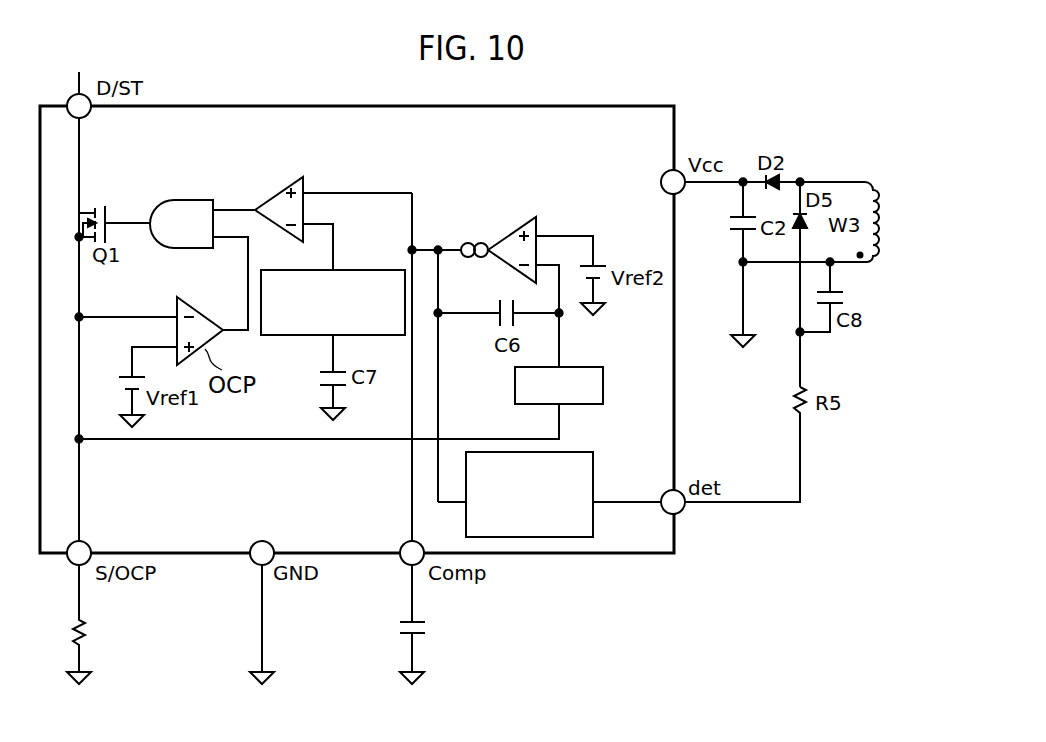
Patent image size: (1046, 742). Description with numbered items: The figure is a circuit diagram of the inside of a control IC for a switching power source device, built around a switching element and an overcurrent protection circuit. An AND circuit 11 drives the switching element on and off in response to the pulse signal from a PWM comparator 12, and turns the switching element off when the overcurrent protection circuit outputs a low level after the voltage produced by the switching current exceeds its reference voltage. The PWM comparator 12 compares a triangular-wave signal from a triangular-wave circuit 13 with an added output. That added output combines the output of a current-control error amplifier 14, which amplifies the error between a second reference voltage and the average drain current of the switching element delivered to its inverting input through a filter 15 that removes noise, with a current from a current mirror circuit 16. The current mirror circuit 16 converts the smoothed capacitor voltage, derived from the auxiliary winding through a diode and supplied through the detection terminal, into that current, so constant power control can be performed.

The AND circuit 11 is at (178, 200).
The PWM comparator 12 is at (284, 190).
The triangular-wave circuit 13 is at (365, 268).
The current-control error amplifier 14 is at (520, 226).
The filter 15 is at (604, 390).
The current mirror circuit 16 is at (594, 483).